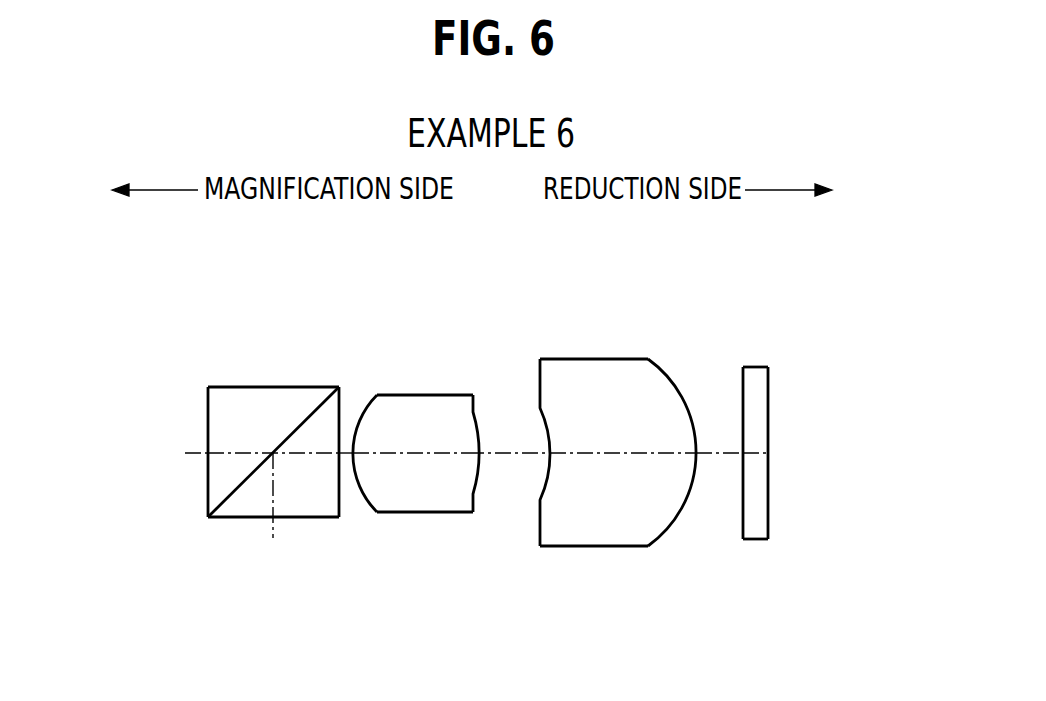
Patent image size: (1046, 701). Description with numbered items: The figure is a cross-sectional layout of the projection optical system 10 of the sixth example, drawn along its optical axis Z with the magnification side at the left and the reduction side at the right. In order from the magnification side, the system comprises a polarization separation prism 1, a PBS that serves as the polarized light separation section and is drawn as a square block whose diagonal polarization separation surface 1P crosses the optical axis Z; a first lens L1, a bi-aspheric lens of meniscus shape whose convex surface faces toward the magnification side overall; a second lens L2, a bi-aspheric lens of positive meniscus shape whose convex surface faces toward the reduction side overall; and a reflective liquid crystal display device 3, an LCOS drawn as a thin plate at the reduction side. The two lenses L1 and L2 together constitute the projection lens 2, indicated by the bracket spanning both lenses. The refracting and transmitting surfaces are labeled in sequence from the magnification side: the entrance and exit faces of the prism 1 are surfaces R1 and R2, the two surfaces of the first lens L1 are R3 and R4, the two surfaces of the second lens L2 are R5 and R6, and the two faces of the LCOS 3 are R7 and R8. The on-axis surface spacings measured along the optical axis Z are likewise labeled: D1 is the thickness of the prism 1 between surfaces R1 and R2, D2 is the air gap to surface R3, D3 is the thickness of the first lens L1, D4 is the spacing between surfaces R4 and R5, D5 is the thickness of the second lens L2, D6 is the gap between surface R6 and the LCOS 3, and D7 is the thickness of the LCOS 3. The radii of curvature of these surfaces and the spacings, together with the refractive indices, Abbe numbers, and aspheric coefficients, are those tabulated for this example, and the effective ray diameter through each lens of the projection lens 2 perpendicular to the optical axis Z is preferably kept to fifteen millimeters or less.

The projection optical system 10 is at (189, 275).
The polarization separation prism 1 is at (245, 392).
The polarization separation surface 1P is at (288, 420).
The projection lens 2 is at (713, 278).
The reflective liquid crystal display device 3 is at (752, 366).
The first lens L1 is at (427, 400).
The second lens L2 is at (607, 370).
The optical axis Z is at (533, 456).
The surface R1 is at (208, 417).
The surface R2 is at (340, 389).
The surface R3 is at (354, 445).
The surface R4 is at (469, 455).
The surface R5 is at (548, 452).
The surface R6 is at (697, 452).
The surface R7 is at (743, 398).
The surface R8 is at (768, 398).
The surface distance D1 is at (226, 457).
The surface distance D2 is at (345, 456).
The surface distance D3 is at (430, 456).
The surface distance D4 is at (478, 456).
The surface distance D5 is at (657, 456).
The surface distance D6 is at (733, 457).
The surface distance D7 is at (758, 457).